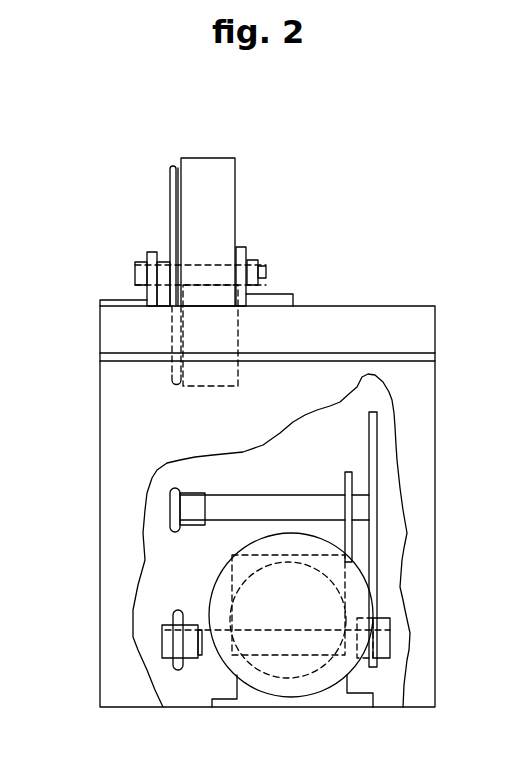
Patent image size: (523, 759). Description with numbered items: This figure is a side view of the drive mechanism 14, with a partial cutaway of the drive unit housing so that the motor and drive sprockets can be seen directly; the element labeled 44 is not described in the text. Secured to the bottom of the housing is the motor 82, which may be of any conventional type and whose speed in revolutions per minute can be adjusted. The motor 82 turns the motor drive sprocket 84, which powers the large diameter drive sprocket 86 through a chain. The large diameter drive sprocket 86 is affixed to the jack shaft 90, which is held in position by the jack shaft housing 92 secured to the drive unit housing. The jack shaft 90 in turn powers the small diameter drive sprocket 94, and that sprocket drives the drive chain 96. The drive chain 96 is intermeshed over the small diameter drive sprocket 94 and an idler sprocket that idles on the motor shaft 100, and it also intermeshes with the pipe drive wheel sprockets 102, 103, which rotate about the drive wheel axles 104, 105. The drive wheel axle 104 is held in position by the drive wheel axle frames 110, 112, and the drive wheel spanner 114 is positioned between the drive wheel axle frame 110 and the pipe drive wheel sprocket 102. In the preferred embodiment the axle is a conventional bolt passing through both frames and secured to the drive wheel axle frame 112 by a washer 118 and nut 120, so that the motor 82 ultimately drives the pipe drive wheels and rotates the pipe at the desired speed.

The drive mechanism 14 is at (175, 483).
The frame 44 is at (432, 290).
The motor 82 is at (320, 597).
The motor drive sprocket 84 is at (385, 641).
The large diameter drive sprocket 86 is at (375, 440).
The jack shaft 90 is at (322, 503).
The jack shaft housing 92 is at (215, 547).
The small diameter drive sprocket 94 is at (197, 510).
The drive chain 96 is at (122, 417).
The motor shaft 100 is at (275, 641).
The pipe drive wheel sprocket 102 is at (169, 201).
The pipe drive wheel sprocket 103 is at (169, 230).
The drive wheel axle 104 is at (193, 275).
The drive wheel axle 105 is at (227, 273).
The drive wheel axle frame 110 is at (123, 300).
The drive wheel axle frame 112 is at (292, 293).
The drive wheel spanner 114 is at (215, 272).
The washer 118 is at (248, 253).
The nut 120 is at (260, 260).